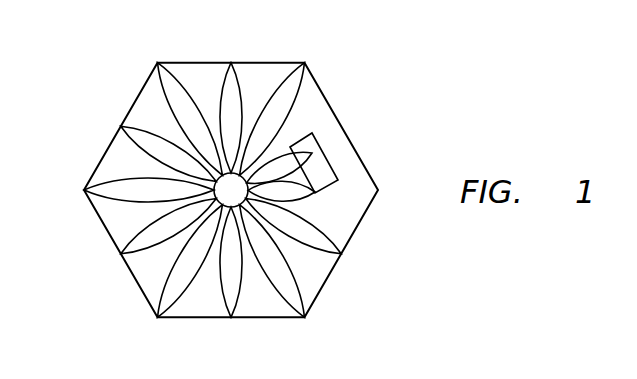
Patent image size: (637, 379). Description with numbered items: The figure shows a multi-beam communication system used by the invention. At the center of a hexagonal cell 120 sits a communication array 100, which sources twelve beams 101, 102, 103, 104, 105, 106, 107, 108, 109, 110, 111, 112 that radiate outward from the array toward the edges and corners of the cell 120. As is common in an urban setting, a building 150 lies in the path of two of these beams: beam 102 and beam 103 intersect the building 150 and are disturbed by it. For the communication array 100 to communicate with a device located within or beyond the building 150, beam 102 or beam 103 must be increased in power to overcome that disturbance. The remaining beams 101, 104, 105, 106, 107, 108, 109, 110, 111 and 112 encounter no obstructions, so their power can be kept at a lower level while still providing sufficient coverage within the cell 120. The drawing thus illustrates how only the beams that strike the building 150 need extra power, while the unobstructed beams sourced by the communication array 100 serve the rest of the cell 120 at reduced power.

The communication array 100 is at (228, 196).
The beam 101 is at (297, 63).
The beam 102 is at (313, 140).
The beam 103 is at (305, 192).
The beam 104 is at (327, 245).
The beam 105 is at (304, 307).
The beam 106 is at (233, 300).
The beam 107 is at (157, 304).
The beam 108 is at (133, 243).
The beam 109 is at (88, 197).
The beam 110 is at (140, 143).
The beam 111 is at (160, 92).
The beam 112 is at (233, 63).
The cell 120 is at (189, 63).
The building 150 is at (327, 173).